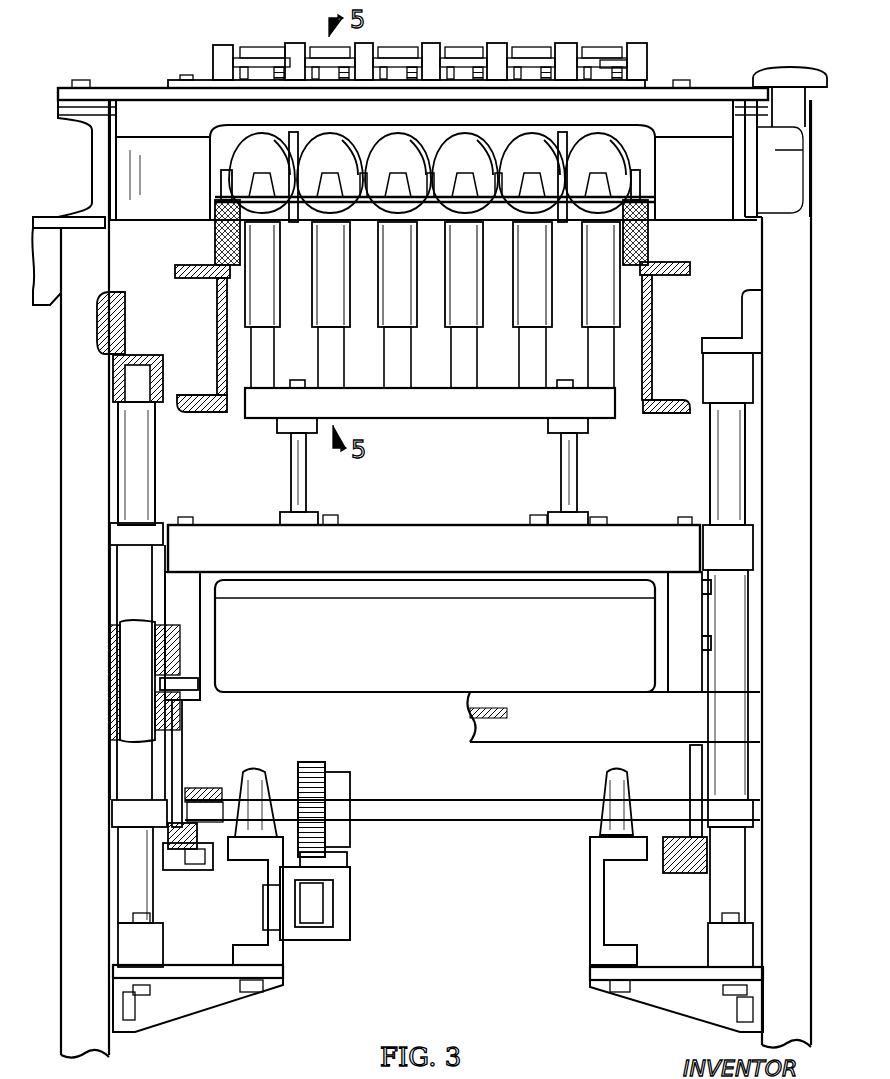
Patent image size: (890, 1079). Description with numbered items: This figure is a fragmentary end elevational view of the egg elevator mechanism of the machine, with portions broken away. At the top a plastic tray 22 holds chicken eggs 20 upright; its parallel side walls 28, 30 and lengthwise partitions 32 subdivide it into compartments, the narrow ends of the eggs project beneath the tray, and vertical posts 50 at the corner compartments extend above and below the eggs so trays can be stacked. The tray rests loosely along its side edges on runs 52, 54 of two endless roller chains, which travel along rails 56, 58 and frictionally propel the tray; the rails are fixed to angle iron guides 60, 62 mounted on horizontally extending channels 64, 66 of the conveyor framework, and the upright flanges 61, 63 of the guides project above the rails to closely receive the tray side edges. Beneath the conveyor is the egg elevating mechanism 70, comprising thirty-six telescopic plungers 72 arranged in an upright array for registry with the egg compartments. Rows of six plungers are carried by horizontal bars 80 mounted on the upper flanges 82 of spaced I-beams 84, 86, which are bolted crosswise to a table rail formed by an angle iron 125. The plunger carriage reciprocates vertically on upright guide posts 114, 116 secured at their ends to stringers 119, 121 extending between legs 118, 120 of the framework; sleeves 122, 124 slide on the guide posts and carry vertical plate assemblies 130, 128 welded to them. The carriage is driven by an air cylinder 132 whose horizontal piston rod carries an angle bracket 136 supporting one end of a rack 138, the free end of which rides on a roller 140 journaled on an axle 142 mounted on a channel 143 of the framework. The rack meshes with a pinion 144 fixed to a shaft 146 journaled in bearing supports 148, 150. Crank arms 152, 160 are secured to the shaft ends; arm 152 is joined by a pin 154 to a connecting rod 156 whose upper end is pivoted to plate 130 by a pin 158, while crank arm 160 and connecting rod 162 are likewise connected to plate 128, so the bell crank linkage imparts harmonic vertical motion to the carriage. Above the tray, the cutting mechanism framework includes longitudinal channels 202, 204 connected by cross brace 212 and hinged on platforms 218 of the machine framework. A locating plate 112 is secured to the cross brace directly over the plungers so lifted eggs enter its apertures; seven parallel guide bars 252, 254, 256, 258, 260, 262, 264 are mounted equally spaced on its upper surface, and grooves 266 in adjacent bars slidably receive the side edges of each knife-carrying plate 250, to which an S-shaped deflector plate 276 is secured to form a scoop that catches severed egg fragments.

The eggs 20 is at (380, 158).
The tray 22 is at (640, 185).
The side wall 28 is at (222, 193).
The side wall 30 is at (641, 193).
The lengthwise partitions 32 is at (382, 205).
The vertical posts 50 is at (295, 222).
The chain run 52 is at (216, 216).
The chain run 54 is at (649, 215).
The rail 56 is at (250, 266).
The rail 58 is at (605, 265).
The angle iron guide 60 is at (170, 272).
The upright flange 61 is at (216, 246).
The angle iron guide 62 is at (692, 266).
The upright flange 63 is at (649, 250).
The channel 64 is at (200, 414).
The channel 66 is at (665, 414).
The egg elevating mechanism 70 is at (484, 898).
The telescopic plungers 72 is at (278, 332).
The horizontal bar 80 is at (425, 412).
The upper flanges 82 is at (278, 424).
The I-beam 84 is at (291, 478).
The I-beam 86 is at (561, 476).
The locating plate 112 is at (700, 86).
The guide post 114 is at (155, 484).
The guide post 116 is at (708, 484).
The leg 118 is at (61, 490).
The stringer 119 is at (97, 333).
The leg 120 is at (815, 510).
The stringer 121 is at (115, 1010).
The sleeve 122 is at (125, 778).
The sleeve 124 is at (752, 790).
The angle iron 125 is at (428, 562).
The vertical plate assembly 128 is at (675, 620).
The vertical plate assembly 130 is at (200, 633).
The air cylinder 132 is at (350, 932).
The angle bracket 136 is at (335, 890).
The rack 138 is at (322, 863).
The roller 140 is at (322, 905).
The axle 142 is at (262, 905).
The channel 143 is at (286, 962).
The pinion 144 is at (310, 762).
The shaft 146 is at (400, 800).
The bearing support 148 is at (253, 770).
The bearing support 150 is at (600, 775).
The crank arm 152 is at (192, 872).
The pin 154 is at (210, 868).
The connecting rod 156 is at (180, 748).
The pin 158 is at (200, 684).
The crank arm 160 is at (680, 875).
The connecting rod 162 is at (690, 757).
The longitudinal channel 202 is at (75, 122).
The longitudinal channel 204 is at (803, 122).
The cross brace 212 is at (136, 90).
The platforms 218 is at (40, 218).
The plate 250 is at (257, 47).
The guide bar 252 is at (645, 43).
The guide bar 254 is at (566, 43).
The guide bar 256 is at (498, 43).
The guide bar 258 is at (430, 43).
The guide bar 260 is at (368, 43).
The guide bar 262 is at (293, 43).
The guide bar 264 is at (222, 45).
The grooves 266 is at (215, 62).
The S-shaped deflector plate 276 is at (604, 50).